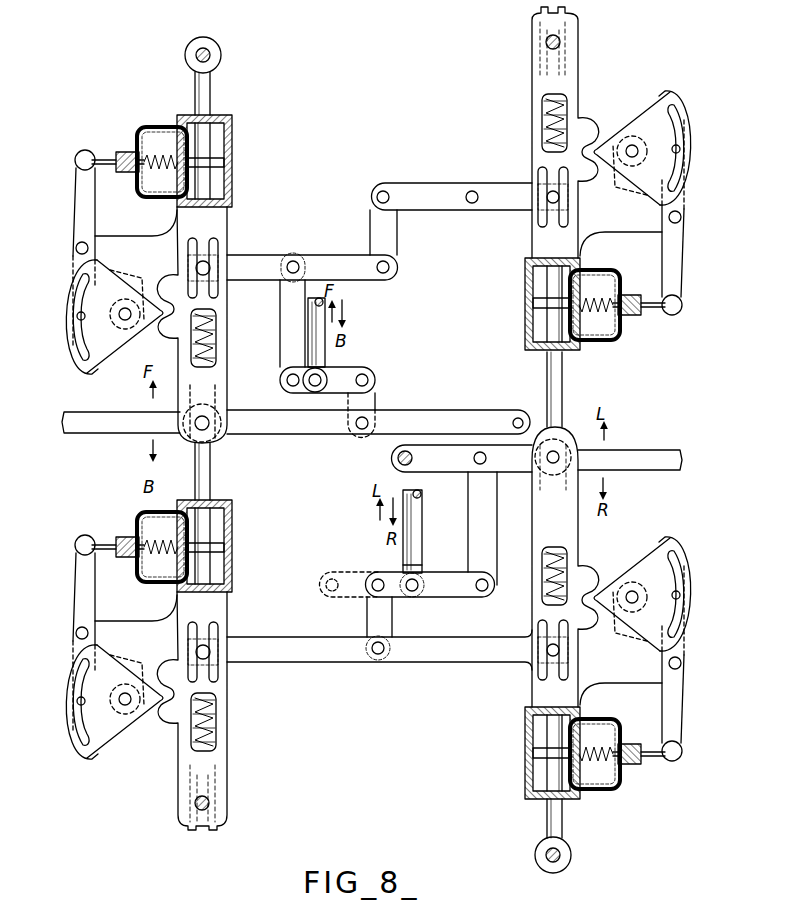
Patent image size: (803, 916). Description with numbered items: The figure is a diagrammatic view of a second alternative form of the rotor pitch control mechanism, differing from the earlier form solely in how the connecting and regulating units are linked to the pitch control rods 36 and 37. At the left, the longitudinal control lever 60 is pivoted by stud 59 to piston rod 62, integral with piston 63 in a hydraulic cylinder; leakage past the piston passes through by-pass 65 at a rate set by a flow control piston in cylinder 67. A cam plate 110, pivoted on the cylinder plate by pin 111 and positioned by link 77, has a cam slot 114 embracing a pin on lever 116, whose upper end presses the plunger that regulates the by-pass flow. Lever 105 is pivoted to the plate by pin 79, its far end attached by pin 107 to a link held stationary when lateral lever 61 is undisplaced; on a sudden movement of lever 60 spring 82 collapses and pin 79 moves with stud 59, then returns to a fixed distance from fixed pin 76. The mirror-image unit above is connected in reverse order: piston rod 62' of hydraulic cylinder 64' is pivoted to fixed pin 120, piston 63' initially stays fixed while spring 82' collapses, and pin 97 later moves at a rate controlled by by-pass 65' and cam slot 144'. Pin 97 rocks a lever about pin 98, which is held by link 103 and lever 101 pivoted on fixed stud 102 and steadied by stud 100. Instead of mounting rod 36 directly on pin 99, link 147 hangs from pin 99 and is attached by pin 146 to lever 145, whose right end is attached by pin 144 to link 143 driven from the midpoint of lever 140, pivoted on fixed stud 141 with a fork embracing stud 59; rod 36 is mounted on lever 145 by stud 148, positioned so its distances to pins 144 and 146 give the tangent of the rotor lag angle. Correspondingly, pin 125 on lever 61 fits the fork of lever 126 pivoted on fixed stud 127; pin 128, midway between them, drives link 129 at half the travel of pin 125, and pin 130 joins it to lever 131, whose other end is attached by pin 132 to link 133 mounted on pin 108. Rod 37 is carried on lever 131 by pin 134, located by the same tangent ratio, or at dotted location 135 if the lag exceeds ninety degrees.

The fixed pin 120 is at (185, 55).
The piston rod 62' is at (180, 93).
The hydraulic cylinder 64' is at (230, 156).
The piston 63' is at (234, 162).
The by-pass 65' is at (139, 146).
The cam slot 144' is at (55, 317).
The pin 97 is at (208, 265).
The spring 82' is at (226, 338).
The stud 59 is at (208, 428).
The lever 60 is at (100, 418).
The piston rod 62 is at (228, 471).
The piston 63 is at (224, 540).
The by-pass 65 is at (143, 536).
The cylinder 67 is at (122, 540).
The lever 116 is at (80, 573).
The cam slot 114 is at (75, 740).
The cam plate 110 is at (110, 748).
The pin 111 is at (128, 705).
The link 77 is at (178, 797).
The pin 79 is at (208, 648).
The spring 82 is at (226, 722).
The fixed pin 76 is at (210, 804).
The pin 99 is at (293, 261).
The pin 98 is at (390, 267).
The link 103 is at (392, 237).
The lever 101 is at (415, 183).
The stud 102 is at (472, 191).
The stud 100 is at (547, 210).
The link 147 is at (290, 310).
The pitch control rod 36 is at (326, 366).
The lever 145 is at (345, 370).
The pin 146 is at (287, 380).
The stud 148 is at (310, 386).
The pin 144 is at (386, 379).
The link 143 is at (375, 408).
The lever 140 is at (450, 415).
The fixed stud 141 is at (516, 418).
The lever 126 is at (443, 472).
The fixed stud 127 is at (396, 458).
The pin 128 is at (486, 463).
The link 129 is at (490, 552).
The pitch control rod 37 is at (422, 532).
The lever 131 is at (447, 595).
The pin 132 is at (375, 578).
The pin location 135 is at (326, 585).
The pin 134 is at (414, 593).
The pin 130 is at (486, 595).
The link 133 is at (376, 620).
The lever 105 is at (310, 663).
The pin 108 is at (378, 655).
The pin 125 is at (557, 450).
The lever 61 is at (655, 452).
The pin 107 is at (547, 657).